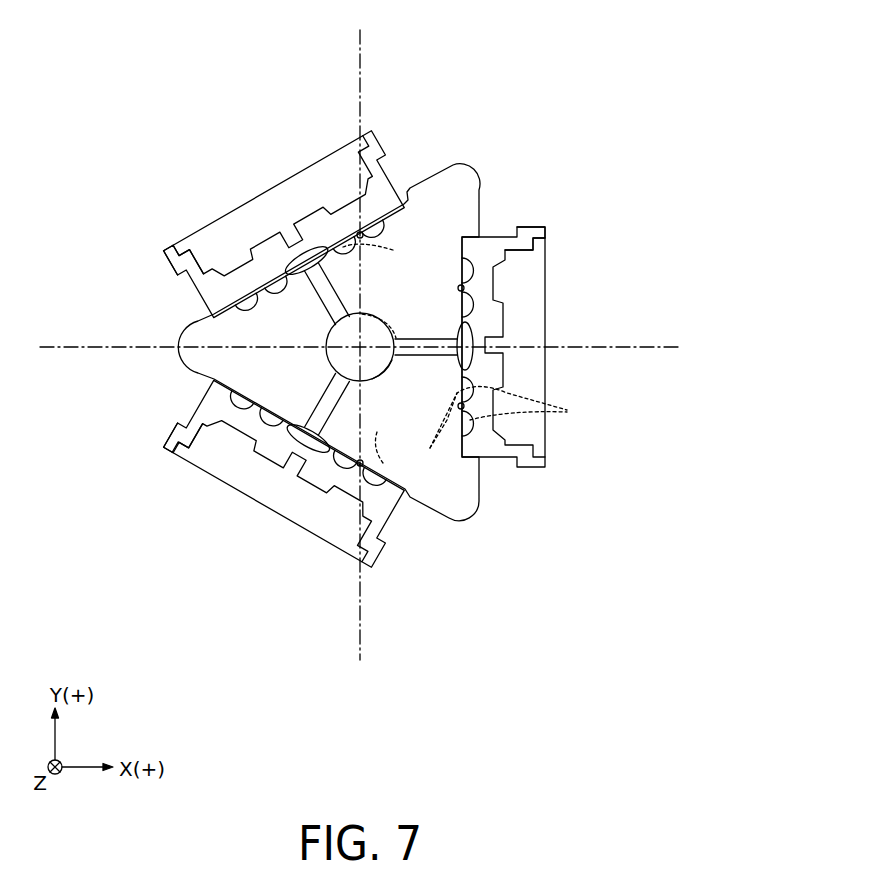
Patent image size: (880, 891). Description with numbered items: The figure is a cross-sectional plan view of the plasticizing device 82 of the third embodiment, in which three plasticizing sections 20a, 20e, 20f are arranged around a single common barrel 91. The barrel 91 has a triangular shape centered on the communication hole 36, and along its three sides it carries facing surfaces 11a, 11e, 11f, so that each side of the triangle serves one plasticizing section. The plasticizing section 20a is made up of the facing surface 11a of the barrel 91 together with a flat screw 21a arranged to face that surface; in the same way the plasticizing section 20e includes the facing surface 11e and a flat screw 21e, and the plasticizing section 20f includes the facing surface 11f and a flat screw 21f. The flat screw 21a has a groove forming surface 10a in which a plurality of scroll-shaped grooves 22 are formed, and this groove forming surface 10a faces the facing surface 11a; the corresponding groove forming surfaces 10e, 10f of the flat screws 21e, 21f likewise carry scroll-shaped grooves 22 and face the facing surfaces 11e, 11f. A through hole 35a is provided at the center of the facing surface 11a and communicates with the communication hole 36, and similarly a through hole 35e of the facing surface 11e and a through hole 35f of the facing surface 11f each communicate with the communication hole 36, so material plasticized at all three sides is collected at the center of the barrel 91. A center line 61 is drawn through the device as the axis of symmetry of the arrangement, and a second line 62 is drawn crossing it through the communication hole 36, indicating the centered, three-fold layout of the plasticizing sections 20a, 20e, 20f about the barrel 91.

The plasticizing device 82 is at (628, 118).
The barrel 91 is at (453, 165).
The center line 61 is at (380, 331).
The communication hole 36 is at (393, 372).
The center axis 62 is at (638, 343).
The groove forming surface 10a is at (617, 406).
The second movable unit 10e is at (308, 606).
The third movable unit 10f is at (327, 95).
The facing surface 11a is at (430, 448).
The facing surface 11e is at (380, 435).
The facing surface 11f is at (393, 250).
The plasticizing section 20a is at (555, 217).
The plasticizing section 20e is at (410, 572).
The plasticizing section 20f is at (142, 252).
The flat screw 21a is at (490, 228).
The flat screw 21e is at (420, 522).
The flat screw 21f is at (197, 298).
The scroll-shaped grooves 22 is at (360, 232).
The through hole 35a is at (455, 324).
The through hole 35e is at (298, 400).
The through hole 35f is at (300, 298).